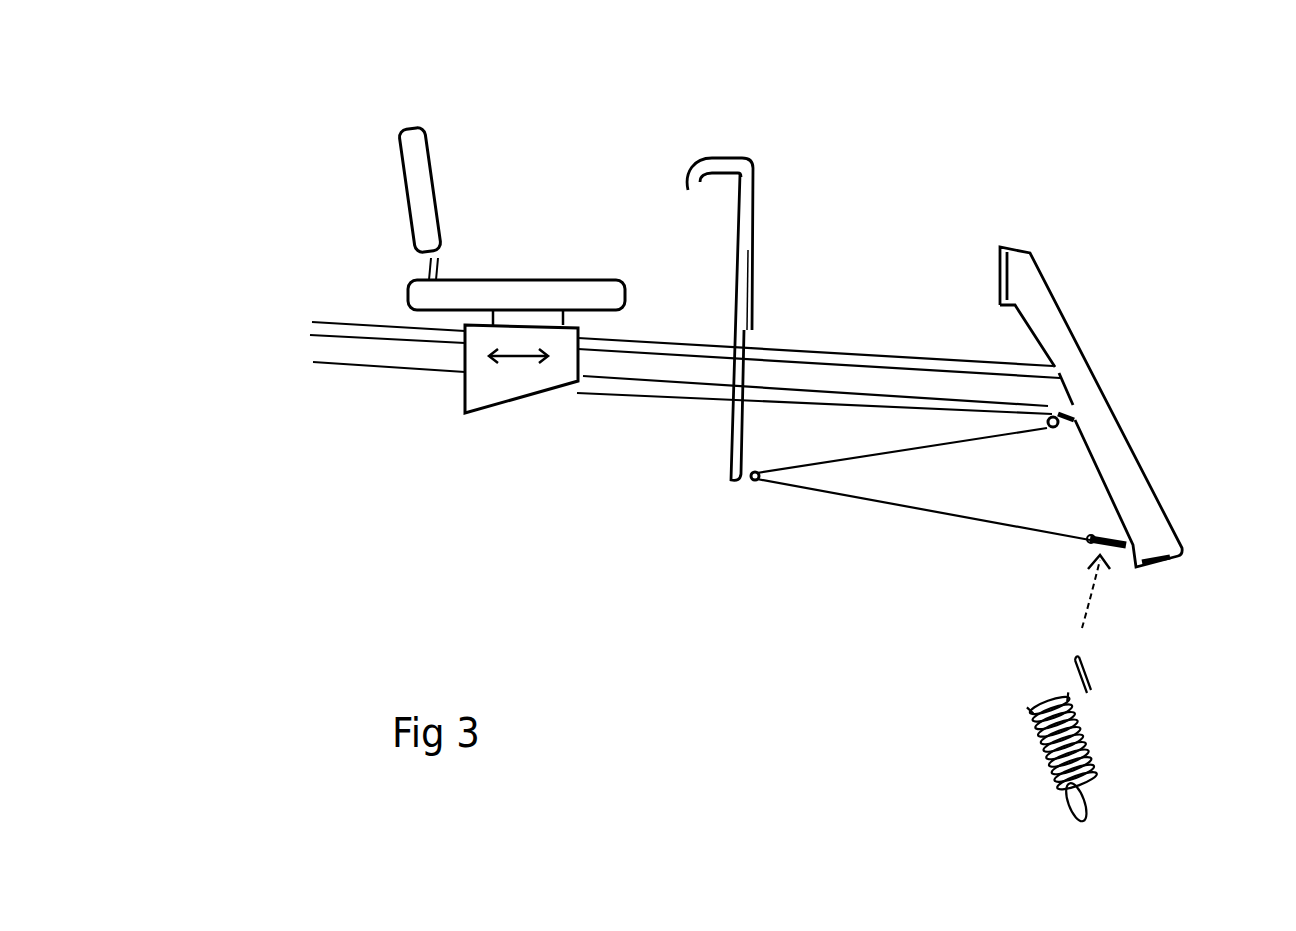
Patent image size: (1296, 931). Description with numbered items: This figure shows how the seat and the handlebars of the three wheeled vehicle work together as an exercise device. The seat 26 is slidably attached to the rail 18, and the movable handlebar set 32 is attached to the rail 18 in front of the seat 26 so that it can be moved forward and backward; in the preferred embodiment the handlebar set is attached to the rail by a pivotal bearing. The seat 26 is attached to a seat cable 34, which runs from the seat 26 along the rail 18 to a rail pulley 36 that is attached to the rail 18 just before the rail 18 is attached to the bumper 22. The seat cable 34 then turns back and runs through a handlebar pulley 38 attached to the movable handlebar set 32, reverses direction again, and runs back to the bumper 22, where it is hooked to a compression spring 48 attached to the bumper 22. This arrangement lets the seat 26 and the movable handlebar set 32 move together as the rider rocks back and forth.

The rail 18 is at (850, 360).
The bumper 22 is at (1118, 470).
The seat 26 is at (420, 180).
The movable handlebar set 32 is at (737, 163).
The seat cable 34 is at (612, 390).
The rail pulley 36 is at (1060, 410).
The handlebar pulley 38 is at (753, 487).
The compression spring 48 is at (1093, 545).